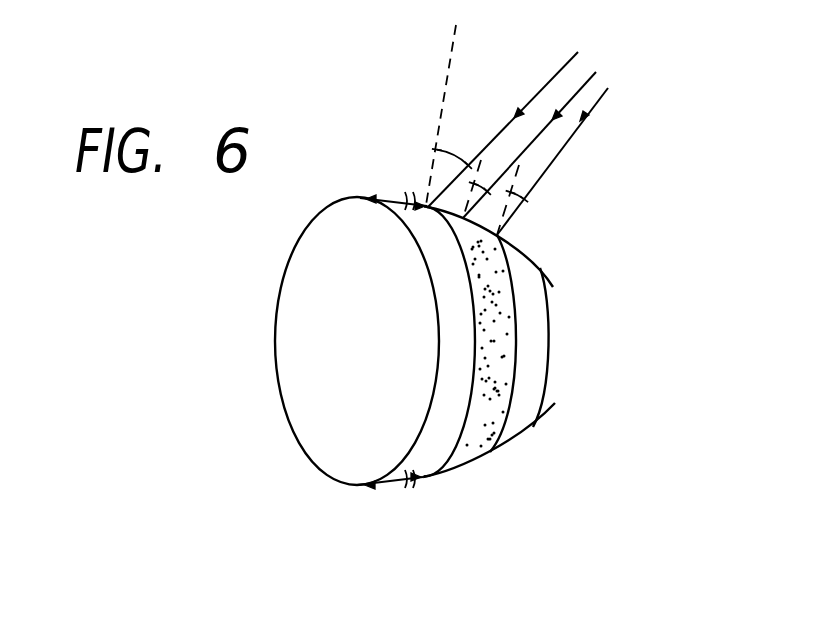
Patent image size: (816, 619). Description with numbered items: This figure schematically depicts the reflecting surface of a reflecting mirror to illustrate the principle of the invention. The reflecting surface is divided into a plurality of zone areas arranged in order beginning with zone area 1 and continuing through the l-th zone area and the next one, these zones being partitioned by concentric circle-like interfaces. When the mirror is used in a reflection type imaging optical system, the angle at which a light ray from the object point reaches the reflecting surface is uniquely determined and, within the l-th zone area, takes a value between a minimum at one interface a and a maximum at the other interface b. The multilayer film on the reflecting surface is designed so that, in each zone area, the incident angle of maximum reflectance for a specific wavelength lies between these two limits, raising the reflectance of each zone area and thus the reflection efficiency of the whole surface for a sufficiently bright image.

The zone area 1 is at (392, 367).
The interface b is at (460, 287).
The interface a is at (527, 318).